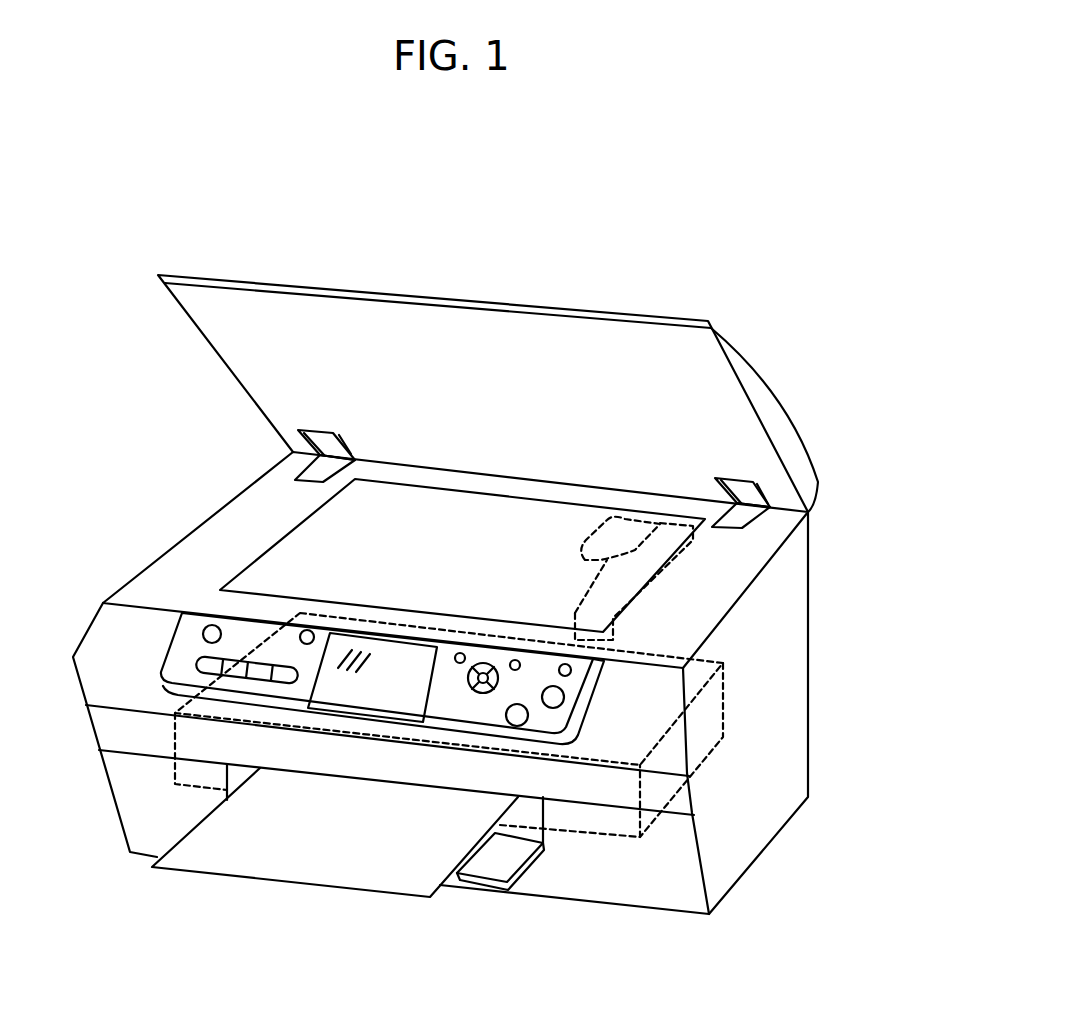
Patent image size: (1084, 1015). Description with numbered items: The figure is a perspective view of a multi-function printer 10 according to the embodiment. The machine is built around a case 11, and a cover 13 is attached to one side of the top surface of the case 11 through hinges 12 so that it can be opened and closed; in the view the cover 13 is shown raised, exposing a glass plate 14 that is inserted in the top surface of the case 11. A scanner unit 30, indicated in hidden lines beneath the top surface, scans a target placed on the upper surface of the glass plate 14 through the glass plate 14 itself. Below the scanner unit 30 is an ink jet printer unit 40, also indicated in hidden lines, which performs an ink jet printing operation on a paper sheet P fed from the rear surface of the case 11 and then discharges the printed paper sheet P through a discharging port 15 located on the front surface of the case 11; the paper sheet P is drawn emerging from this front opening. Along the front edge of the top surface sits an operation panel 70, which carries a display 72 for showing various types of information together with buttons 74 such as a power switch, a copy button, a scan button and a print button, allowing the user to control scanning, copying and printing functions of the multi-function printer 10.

The multi-function printer 10 is at (531, 198).
The case 11 is at (787, 695).
The hinges 12 is at (293, 441).
The cover 13 is at (540, 303).
The glass plate 14 is at (327, 525).
The discharging port 15 is at (530, 817).
The scanner unit 30 is at (667, 541).
The ink jet printer unit 40 is at (713, 660).
The operation panel 70 is at (258, 638).
The display 72 is at (355, 702).
The buttons 74 is at (513, 714).
The paper sheet P is at (207, 857).